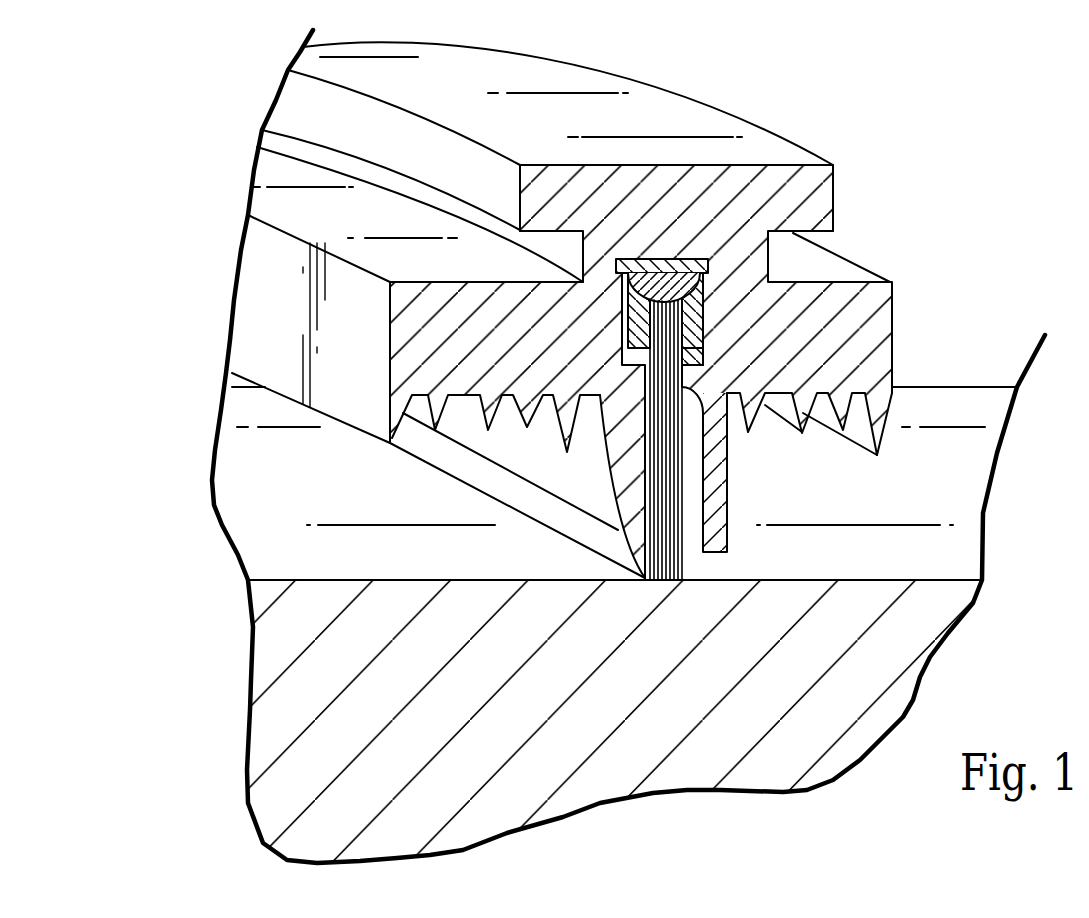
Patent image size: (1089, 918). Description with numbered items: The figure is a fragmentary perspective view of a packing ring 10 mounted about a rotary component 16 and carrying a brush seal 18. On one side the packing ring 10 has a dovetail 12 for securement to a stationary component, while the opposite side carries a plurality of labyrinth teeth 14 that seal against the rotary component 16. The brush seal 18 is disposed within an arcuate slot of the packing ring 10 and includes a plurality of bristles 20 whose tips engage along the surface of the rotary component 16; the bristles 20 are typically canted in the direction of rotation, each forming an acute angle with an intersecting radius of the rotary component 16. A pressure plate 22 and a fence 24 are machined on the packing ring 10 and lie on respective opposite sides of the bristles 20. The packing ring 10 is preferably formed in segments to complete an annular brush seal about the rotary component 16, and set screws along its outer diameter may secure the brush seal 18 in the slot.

The packing ring 10 is at (270, 172).
The dovetail 12 is at (692, 181).
The labyrinth teeth 14 is at (808, 425).
The rotary component 16 is at (955, 490).
The brush seal 18 is at (737, 317).
The bristles 20 is at (667, 480).
The pressure plate 22 is at (622, 472).
The fence 24 is at (715, 523).